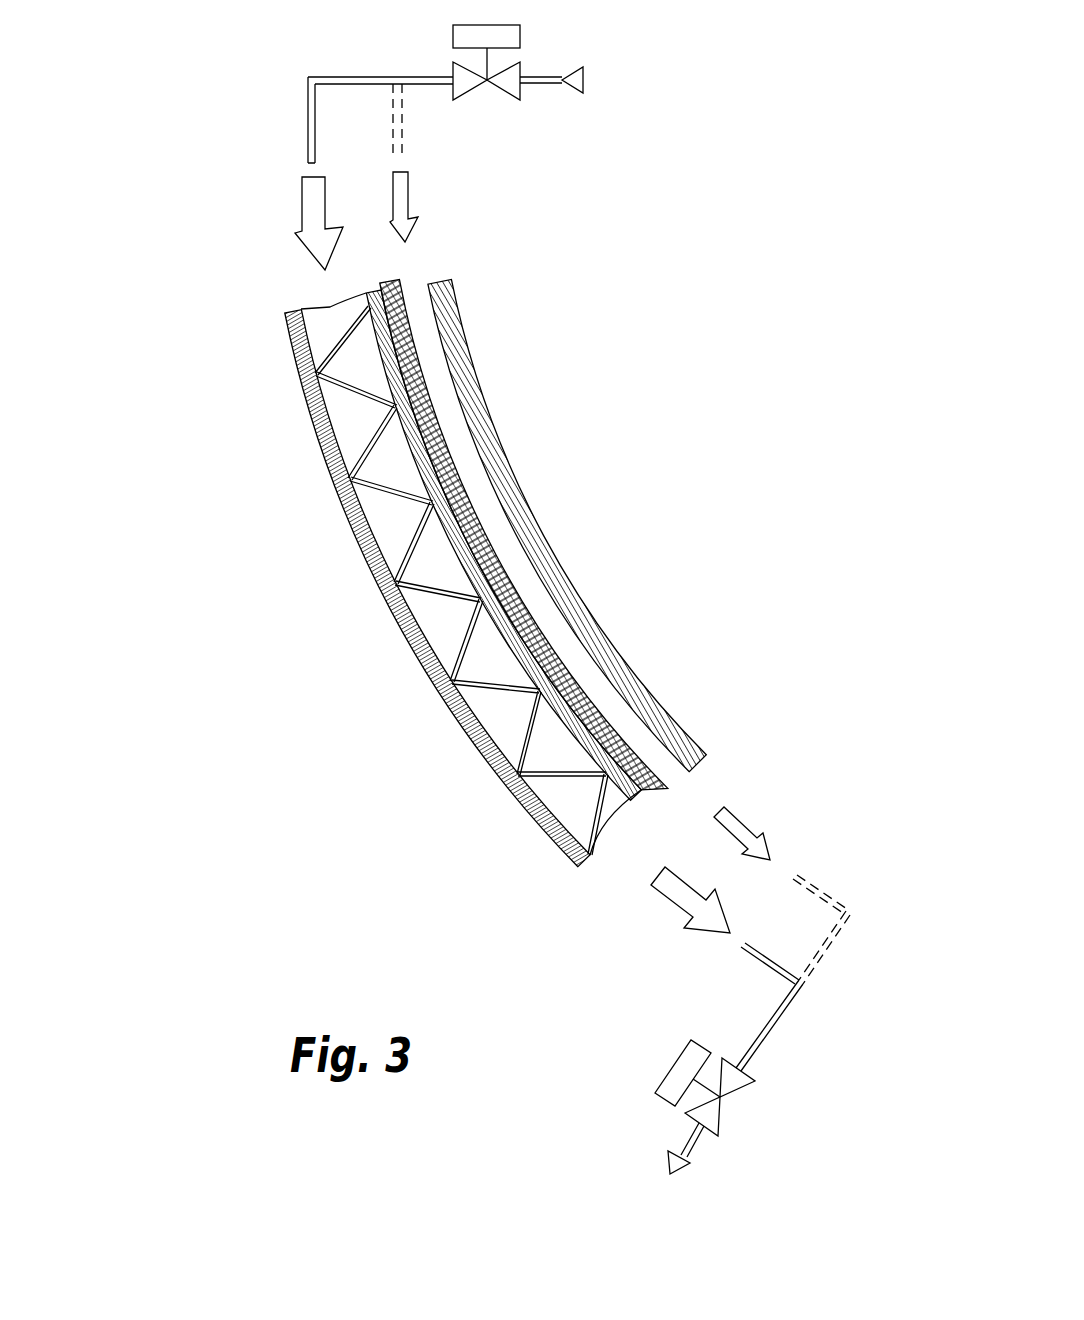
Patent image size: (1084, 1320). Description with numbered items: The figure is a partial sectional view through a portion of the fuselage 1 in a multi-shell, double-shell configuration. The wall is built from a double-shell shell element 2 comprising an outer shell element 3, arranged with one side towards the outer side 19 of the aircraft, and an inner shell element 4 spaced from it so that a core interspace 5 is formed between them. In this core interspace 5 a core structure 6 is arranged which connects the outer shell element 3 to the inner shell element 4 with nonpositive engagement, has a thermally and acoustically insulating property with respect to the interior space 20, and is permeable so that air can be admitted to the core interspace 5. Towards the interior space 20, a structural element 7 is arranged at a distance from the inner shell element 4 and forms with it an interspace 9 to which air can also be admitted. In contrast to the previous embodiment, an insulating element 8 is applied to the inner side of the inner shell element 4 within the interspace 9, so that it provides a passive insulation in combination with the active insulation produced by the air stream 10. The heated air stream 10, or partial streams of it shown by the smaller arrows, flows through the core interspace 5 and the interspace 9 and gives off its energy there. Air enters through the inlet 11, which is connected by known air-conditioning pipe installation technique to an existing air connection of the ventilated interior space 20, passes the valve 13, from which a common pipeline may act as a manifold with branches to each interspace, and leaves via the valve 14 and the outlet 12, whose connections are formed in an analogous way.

The fuselage 1 is at (250, 745).
The shell element 2 is at (255, 352).
The outer shell element 3 is at (317, 448).
The inner shell element 4 is at (427, 347).
The core interspace 5 is at (388, 525).
The core structure 6 is at (467, 643).
The structural element 7 is at (603, 625).
The insulating element 8 is at (500, 549).
The interspace 9 is at (462, 442).
The air stream 10 is at (317, 202).
The inlet 11 is at (577, 78).
The outlet 12 is at (678, 1168).
The valve 13 is at (508, 80).
The valve 14 is at (712, 1117).
The outer side 19 is at (209, 644).
The interior space 20 is at (709, 452).